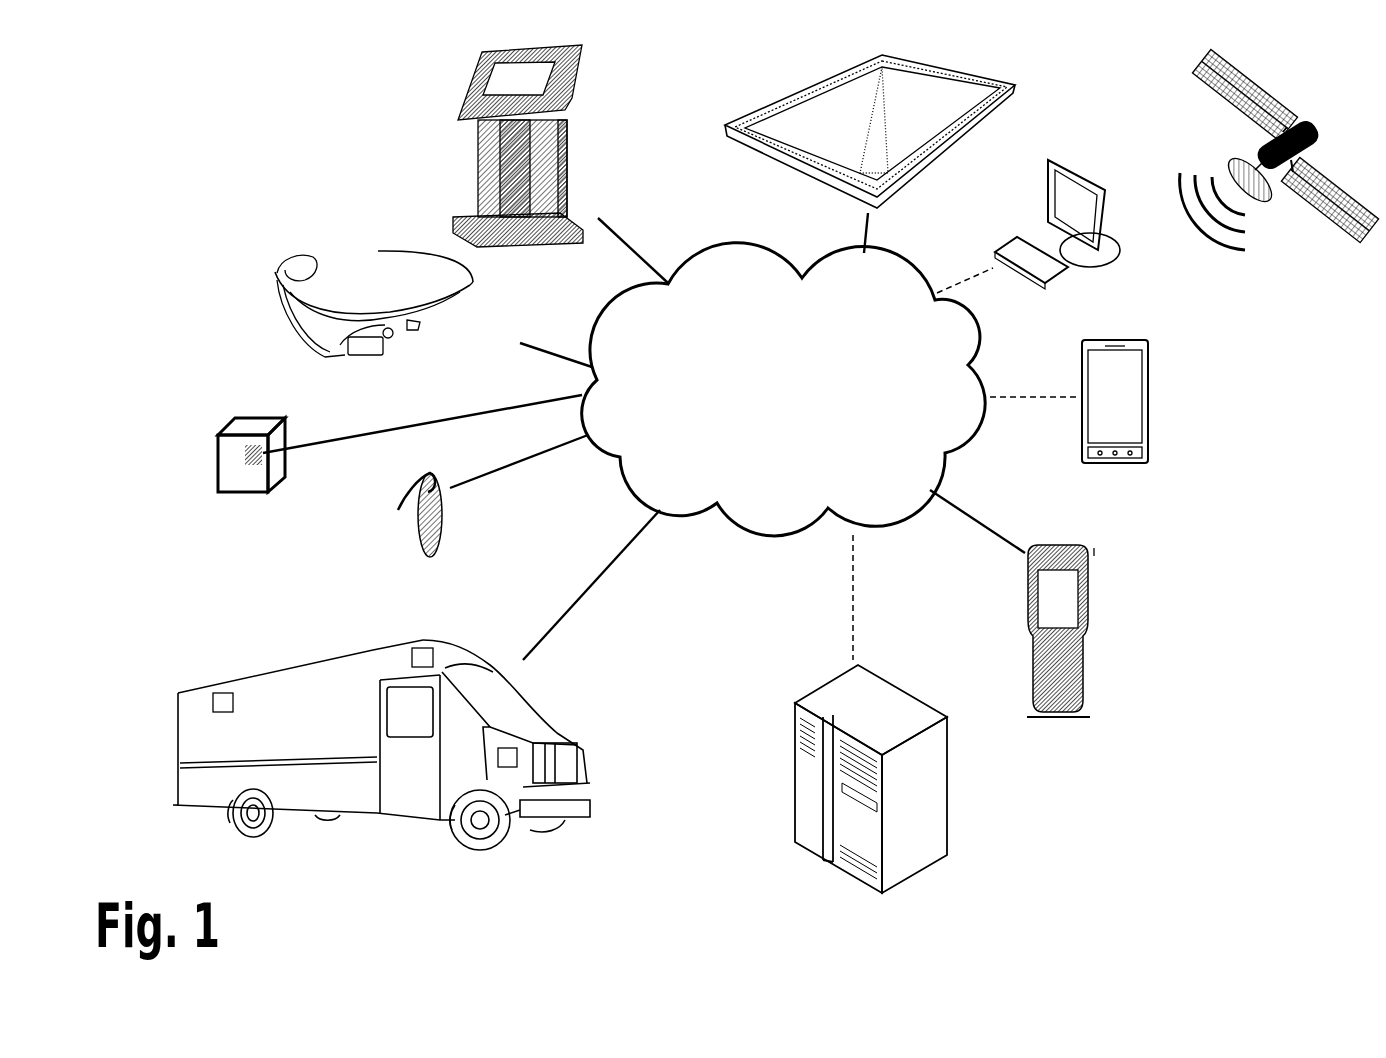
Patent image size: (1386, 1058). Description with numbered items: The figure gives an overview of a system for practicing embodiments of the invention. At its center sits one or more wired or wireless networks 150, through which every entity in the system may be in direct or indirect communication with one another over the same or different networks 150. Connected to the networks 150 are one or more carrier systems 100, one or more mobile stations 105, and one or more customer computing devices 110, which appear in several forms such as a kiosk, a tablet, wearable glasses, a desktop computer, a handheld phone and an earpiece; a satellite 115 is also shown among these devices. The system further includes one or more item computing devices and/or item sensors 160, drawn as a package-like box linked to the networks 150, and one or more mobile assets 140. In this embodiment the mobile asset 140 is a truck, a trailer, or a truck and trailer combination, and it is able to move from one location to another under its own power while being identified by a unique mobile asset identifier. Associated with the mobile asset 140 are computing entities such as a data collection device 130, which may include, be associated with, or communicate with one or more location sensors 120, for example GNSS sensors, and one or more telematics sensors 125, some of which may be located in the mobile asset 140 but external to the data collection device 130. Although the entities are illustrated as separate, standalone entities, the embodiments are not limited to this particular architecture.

The carrier system 100 is at (871, 803).
The mobile station 105 is at (1060, 653).
The customer computing device 110 is at (737, 306).
The satellite 115 is at (1262, 150).
The location sensor 120 is at (418, 650).
The telematics sensor 125 is at (222, 698).
The data collection device 130 is at (507, 753).
The mobile asset 140 is at (413, 732).
The network 150 is at (783, 389).
The item computing device and/or item sensor 160 is at (247, 460).